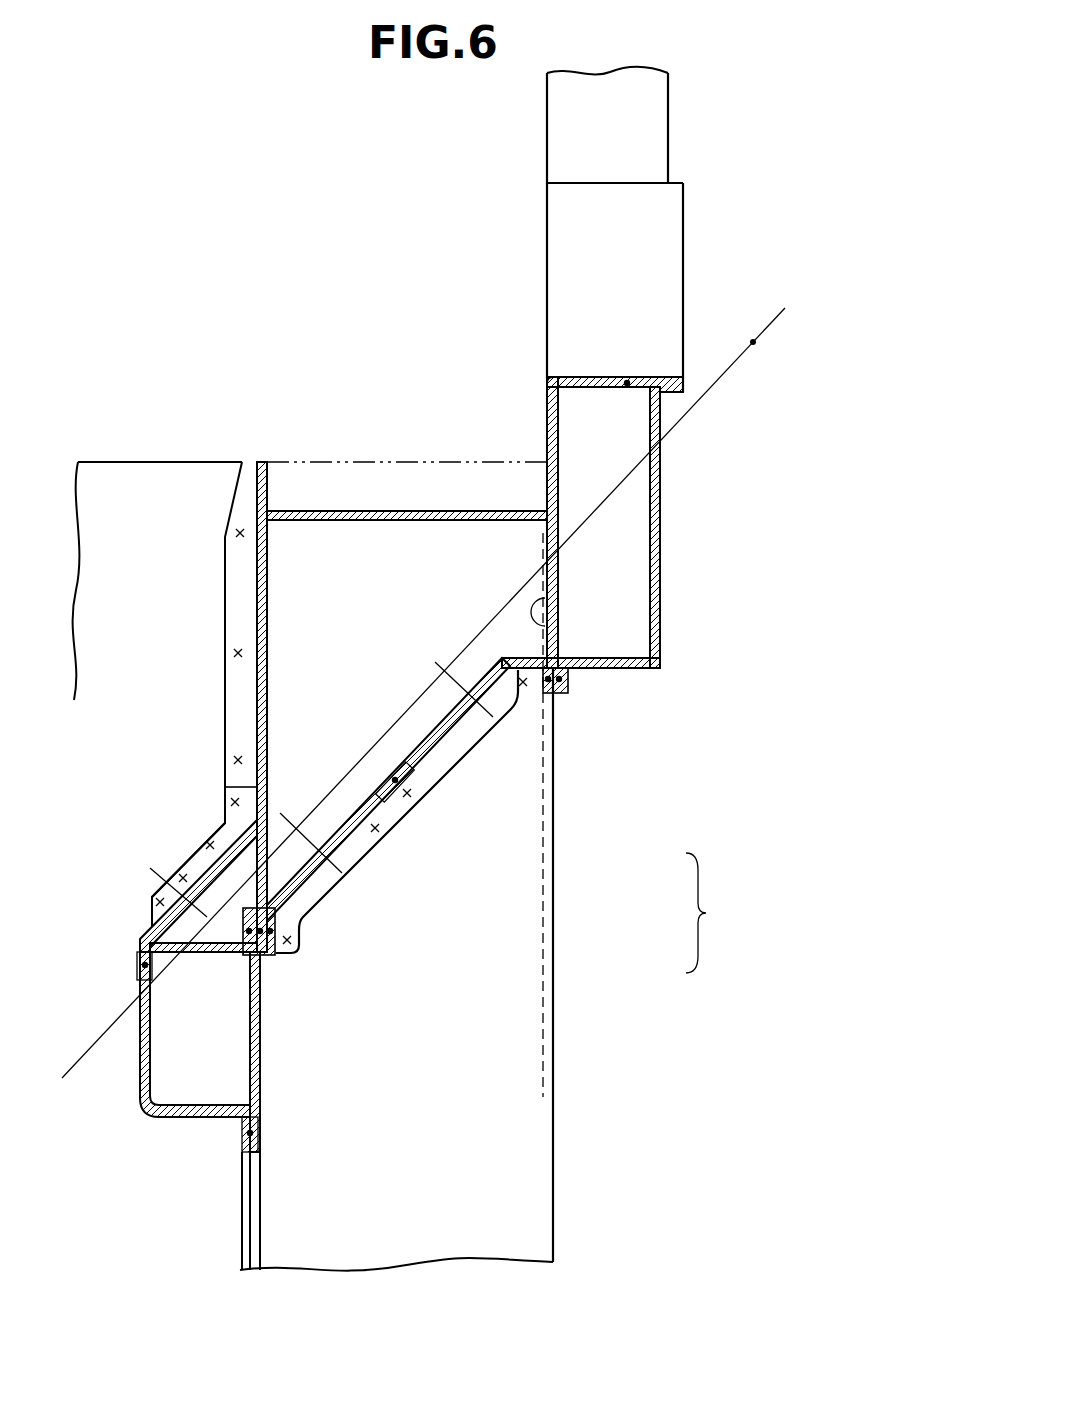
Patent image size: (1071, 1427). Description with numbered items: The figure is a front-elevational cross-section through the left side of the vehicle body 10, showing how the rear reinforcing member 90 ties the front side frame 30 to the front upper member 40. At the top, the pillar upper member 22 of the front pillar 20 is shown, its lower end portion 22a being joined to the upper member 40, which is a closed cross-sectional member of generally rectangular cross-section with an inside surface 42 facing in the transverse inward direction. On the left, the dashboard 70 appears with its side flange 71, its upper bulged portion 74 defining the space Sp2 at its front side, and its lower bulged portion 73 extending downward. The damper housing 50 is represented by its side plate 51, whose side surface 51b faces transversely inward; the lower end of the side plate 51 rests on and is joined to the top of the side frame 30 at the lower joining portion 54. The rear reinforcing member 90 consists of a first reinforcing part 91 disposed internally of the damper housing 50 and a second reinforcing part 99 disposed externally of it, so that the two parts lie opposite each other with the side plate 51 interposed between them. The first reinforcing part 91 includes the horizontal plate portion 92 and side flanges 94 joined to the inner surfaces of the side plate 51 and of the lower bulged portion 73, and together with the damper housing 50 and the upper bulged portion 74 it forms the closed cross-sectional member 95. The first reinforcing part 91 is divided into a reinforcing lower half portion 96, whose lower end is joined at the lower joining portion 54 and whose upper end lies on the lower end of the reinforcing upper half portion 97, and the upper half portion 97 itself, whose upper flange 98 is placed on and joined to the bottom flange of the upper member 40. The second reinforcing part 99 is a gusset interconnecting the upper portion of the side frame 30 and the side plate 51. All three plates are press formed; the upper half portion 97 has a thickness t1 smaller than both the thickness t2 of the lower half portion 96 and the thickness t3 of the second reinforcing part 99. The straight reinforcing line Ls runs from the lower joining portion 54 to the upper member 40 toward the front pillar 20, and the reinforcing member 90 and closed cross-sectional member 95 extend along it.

The vehicle body 10 is at (117, 277).
The front pillar 20 is at (695, 229).
The pillar upper member 22 is at (695, 229).
The lower end portion of pillar upper member 22a is at (662, 156).
The front side frame 30 is at (222, 1045).
The front upper member 40 is at (630, 487).
The inside surface 42 is at (547, 412).
The front damper housing 50 is at (215, 482).
The side plate 51 is at (257, 595).
The side surface 51b is at (257, 692).
The lower joining portion 54 is at (265, 972).
The dashboard 70 is at (118, 458).
The side flange 71 is at (553, 622).
The lower bulged portion 73 is at (532, 1186).
The upper bulged portion 74 is at (318, 510).
The rear reinforcing member 90 is at (505, 871).
The first reinforcing part 91 is at (715, 913).
The horizontal plate portion 92 is at (458, 726).
The side flanges 94 is at (322, 892).
The closed cross-sectional member 95 is at (300, 735).
The reinforcing lower half portion 96 is at (344, 834).
The reinforcing upper half portion 97 is at (432, 769).
The upper flange 98 is at (548, 694).
The second reinforcing part 99 is at (190, 862).
The reinforcing line Ls is at (755, 343).
The space Sp2 is at (420, 538).
The thickness of reinforcing upper half portion t1 is at (451, 671).
The thickness of reinforcing lower half portion t2 is at (310, 826).
The thickness of second reinforcing part t3 is at (157, 883).